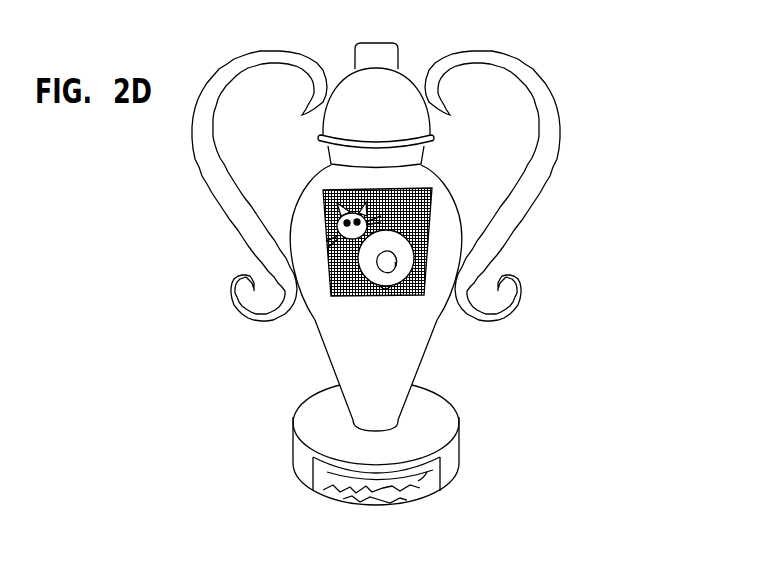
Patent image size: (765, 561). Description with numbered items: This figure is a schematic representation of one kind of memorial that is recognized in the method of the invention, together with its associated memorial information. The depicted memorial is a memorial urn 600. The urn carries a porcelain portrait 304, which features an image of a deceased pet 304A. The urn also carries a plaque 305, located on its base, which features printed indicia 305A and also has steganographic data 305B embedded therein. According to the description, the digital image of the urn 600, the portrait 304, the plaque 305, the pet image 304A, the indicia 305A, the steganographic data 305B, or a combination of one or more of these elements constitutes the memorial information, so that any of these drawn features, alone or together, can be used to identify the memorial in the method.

The memorial urn 600 is at (562, 78).
The porcelain portrait 304 is at (433, 222).
The image of a deceased pet 304A is at (423, 200).
The plaque 305 is at (440, 460).
The printed indicia 305A is at (440, 491).
The steganographic data 305B is at (313, 490).